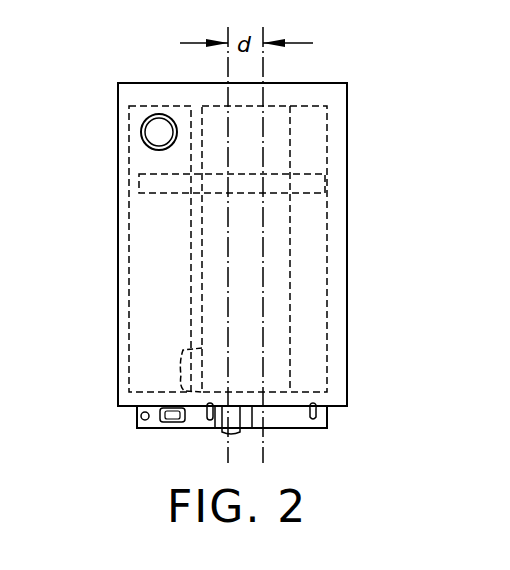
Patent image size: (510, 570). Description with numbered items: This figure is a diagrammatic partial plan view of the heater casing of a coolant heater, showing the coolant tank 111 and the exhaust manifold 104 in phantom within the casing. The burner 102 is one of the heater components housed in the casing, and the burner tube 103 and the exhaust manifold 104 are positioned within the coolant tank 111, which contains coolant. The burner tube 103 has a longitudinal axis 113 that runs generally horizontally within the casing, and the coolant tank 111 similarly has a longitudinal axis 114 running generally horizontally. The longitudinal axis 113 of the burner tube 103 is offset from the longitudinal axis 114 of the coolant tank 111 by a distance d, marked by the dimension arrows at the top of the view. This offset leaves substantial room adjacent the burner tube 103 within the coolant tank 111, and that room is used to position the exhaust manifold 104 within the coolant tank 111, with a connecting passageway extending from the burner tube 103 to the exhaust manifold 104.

The burner 102 is at (142, 126).
The burner tube 103 is at (327, 142).
The exhaust manifold 104 is at (129, 249).
The coolant tank 111 is at (347, 333).
The longitudinal axis 113 is at (263, 447).
The longitudinal axis 114 is at (228, 447).